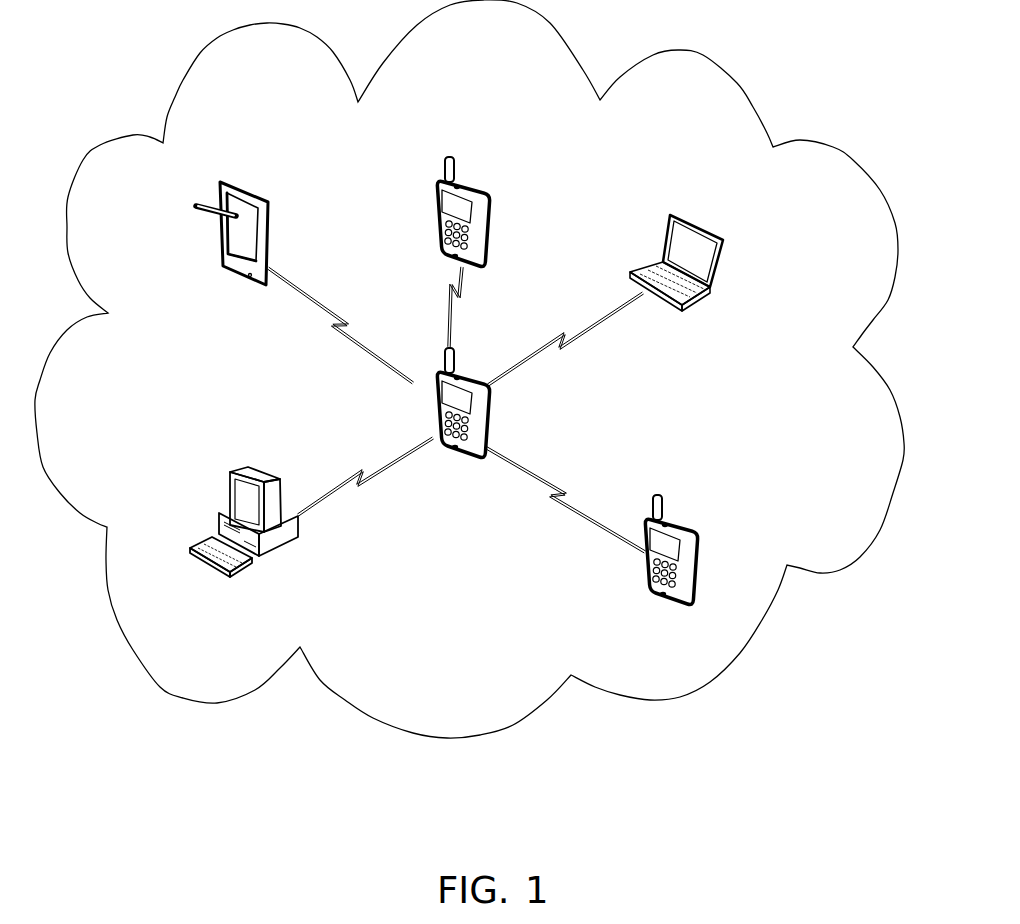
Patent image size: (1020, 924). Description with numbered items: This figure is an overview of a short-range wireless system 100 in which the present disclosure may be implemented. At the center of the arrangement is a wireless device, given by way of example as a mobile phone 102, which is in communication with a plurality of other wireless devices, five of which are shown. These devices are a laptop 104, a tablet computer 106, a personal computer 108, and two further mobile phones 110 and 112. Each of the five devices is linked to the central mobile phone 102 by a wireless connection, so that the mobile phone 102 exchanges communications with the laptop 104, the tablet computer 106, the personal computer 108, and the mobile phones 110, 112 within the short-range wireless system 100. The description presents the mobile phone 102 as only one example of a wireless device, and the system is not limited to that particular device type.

The short-range wireless system 100 is at (550, 25).
The mobile phone 102 is at (469, 371).
The laptop 104 is at (720, 236).
The tablet computer 106 is at (266, 203).
The personal computer 108 is at (272, 474).
The mobile phone 110 is at (684, 520).
The mobile phone 112 is at (471, 182).